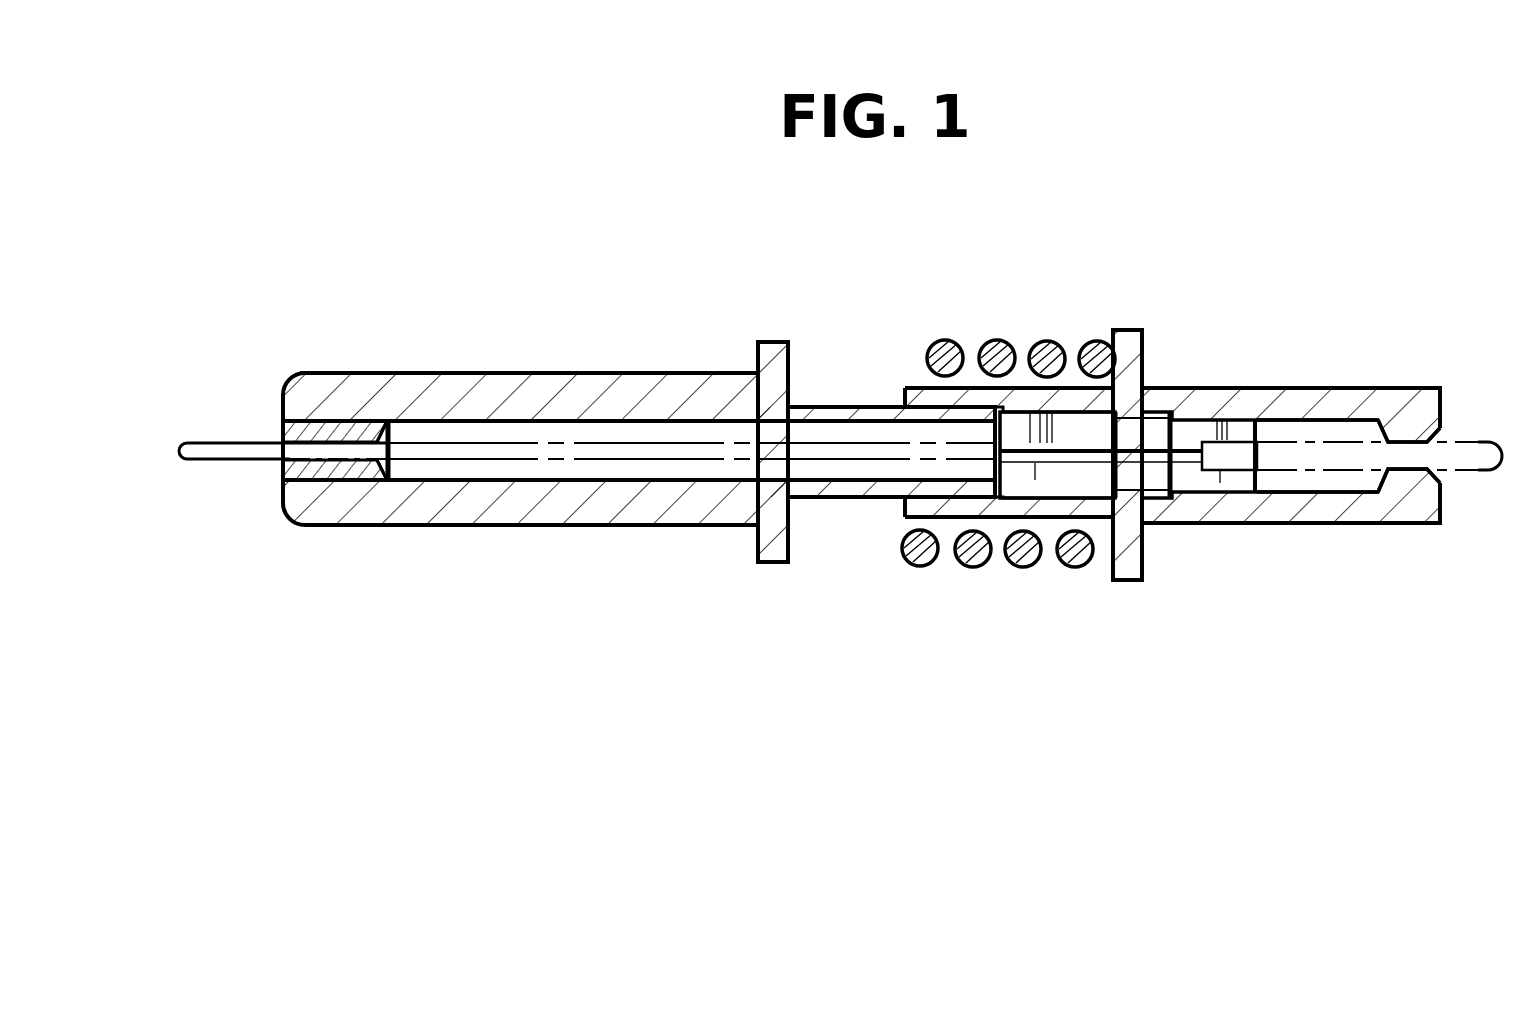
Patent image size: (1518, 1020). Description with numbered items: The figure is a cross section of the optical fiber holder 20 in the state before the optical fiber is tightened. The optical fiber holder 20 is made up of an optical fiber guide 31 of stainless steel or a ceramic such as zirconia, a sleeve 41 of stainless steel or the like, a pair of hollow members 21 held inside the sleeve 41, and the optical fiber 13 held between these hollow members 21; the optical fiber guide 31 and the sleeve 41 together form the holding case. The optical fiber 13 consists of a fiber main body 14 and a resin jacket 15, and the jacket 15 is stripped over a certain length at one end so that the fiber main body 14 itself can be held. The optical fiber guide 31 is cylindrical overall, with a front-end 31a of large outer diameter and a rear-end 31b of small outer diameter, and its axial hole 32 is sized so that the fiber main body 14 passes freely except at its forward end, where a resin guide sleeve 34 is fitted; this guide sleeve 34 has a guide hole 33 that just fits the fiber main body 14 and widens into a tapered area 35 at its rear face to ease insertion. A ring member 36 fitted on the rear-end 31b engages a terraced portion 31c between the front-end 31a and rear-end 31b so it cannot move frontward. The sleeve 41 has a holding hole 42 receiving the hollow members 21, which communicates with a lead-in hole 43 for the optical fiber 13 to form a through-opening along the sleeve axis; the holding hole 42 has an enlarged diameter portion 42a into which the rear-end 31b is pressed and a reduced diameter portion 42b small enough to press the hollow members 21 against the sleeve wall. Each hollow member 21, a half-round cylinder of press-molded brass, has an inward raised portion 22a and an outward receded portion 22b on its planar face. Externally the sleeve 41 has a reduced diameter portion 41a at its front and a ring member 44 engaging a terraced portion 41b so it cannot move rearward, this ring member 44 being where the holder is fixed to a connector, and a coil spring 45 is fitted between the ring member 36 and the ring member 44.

The optical fiber 13 is at (462, 436).
The fiber main body 14 is at (245, 440).
The jacket 15 is at (1465, 485).
The optical fiber holder 20 is at (563, 350).
The hollow member 21 is at (1157, 430).
The inward raised portion 22a is at (1205, 440).
The outward receded portion 22b is at (1055, 447).
The optical fiber guide 31 is at (540, 532).
The front-end 31a is at (646, 373).
The rear-end 31b is at (835, 407).
The terraced portion 31c is at (740, 505).
The axial hole 32 is at (480, 462).
The guide hole 33 is at (340, 425).
The guide sleeve 34 is at (330, 478).
The tapered area 35 is at (398, 480).
The ring member 36 is at (773, 342).
The sleeve 41 is at (1253, 532).
The reduced diameter portion 41a is at (1002, 517).
The terraced portion 41b is at (1147, 388).
The holding hole 42 is at (1278, 406).
The enlarged diameter portion 42a is at (1060, 490).
The reduced diameter portion 42b is at (1305, 500).
The lead-in hole 43 is at (1405, 440).
The ring member 44 is at (1123, 582).
The coil spring 45 is at (945, 340).